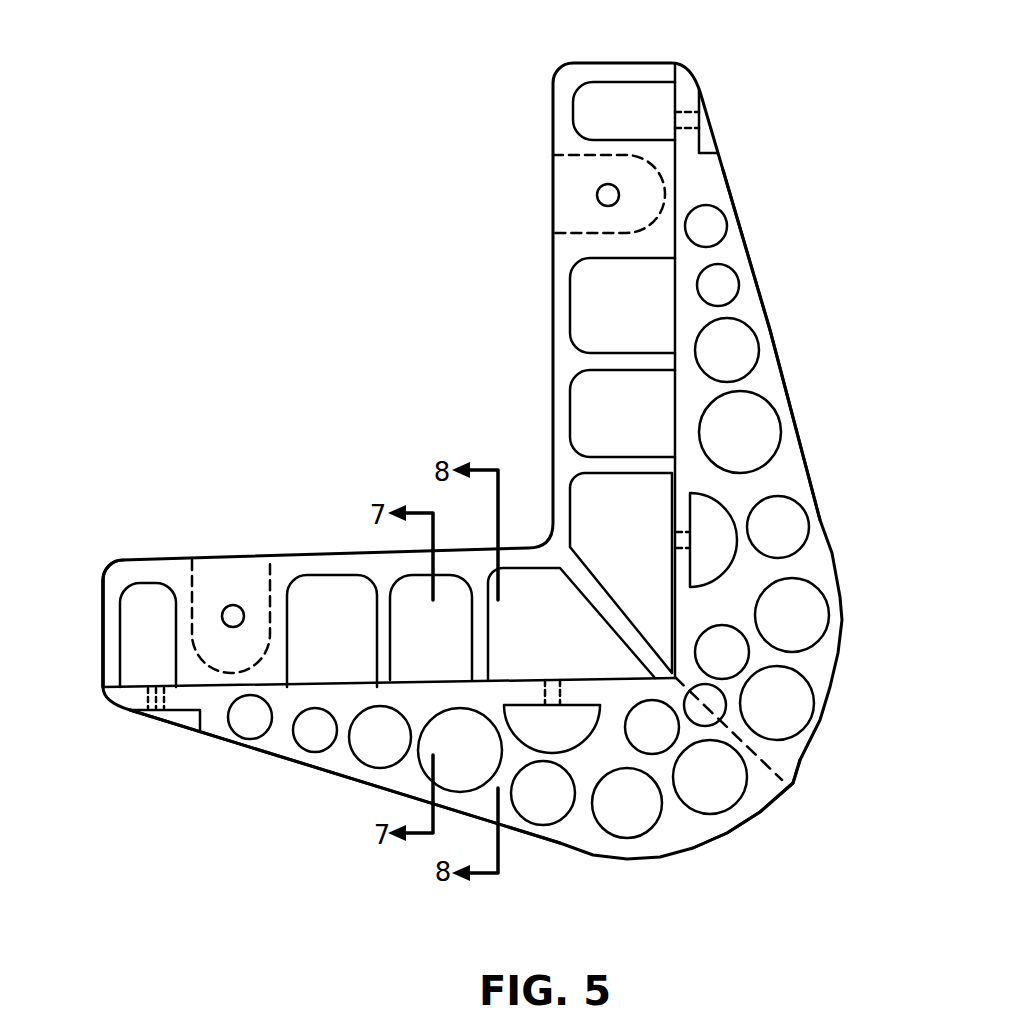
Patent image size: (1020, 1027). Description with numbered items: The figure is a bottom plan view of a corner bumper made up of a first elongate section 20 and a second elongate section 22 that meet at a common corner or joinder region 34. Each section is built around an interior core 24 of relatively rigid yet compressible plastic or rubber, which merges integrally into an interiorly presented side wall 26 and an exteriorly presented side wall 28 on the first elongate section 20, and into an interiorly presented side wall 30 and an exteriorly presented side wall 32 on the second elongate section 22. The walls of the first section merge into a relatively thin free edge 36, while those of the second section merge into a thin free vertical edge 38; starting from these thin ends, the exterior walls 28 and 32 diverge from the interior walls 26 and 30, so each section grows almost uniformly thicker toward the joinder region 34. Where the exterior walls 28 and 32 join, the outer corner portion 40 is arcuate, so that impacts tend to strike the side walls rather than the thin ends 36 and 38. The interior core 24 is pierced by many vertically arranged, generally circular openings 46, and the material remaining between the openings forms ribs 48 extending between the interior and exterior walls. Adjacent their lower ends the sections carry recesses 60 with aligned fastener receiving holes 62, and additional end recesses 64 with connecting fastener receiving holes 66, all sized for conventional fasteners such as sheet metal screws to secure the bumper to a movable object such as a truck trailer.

The first elongate section 20 is at (323, 795).
The second elongate section 22 is at (828, 302).
The interior core 24 is at (787, 485).
The interiorly presented side wall 26 is at (423, 677).
The exteriorly presented side wall 28 is at (280, 760).
The interiorly presented side wall 30 is at (672, 585).
The exteriorly presented side wall 32 is at (797, 433).
The joinder region 34 is at (770, 765).
The free edge 36 is at (103, 695).
The free vertical edge 38 is at (673, 63).
The outer corner portion 40 is at (733, 822).
The openings 46 is at (758, 435).
The ribs 48 is at (727, 252).
The recesses 60 is at (708, 555).
The fastener receiving holes 62 is at (675, 532).
The end recesses 64 is at (175, 720).
The fastener receiving holes 66 is at (152, 687).